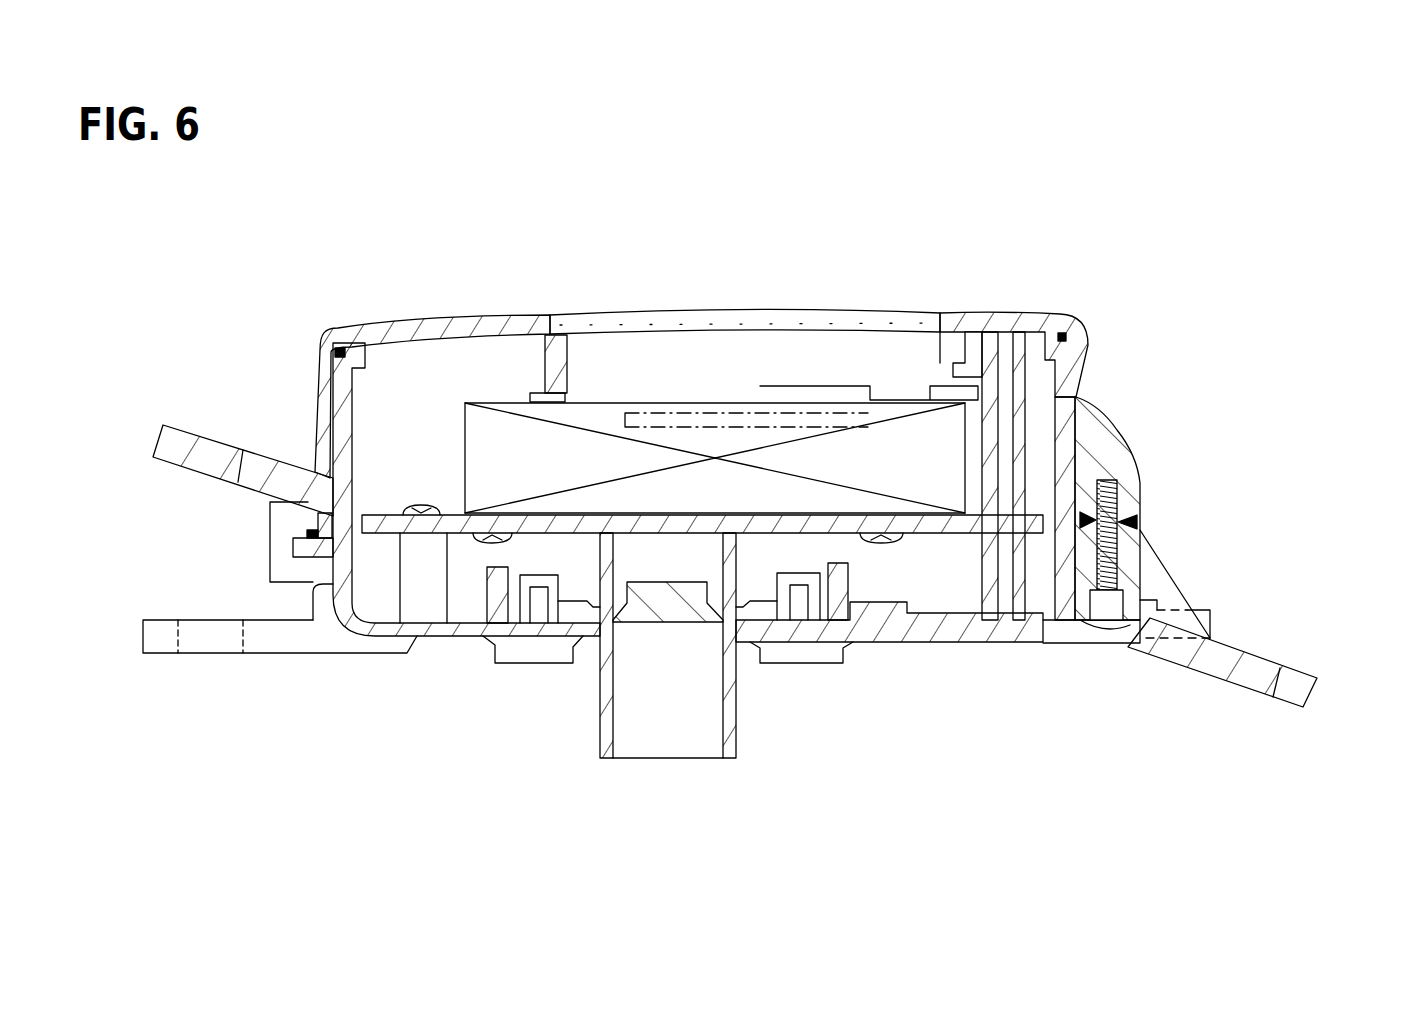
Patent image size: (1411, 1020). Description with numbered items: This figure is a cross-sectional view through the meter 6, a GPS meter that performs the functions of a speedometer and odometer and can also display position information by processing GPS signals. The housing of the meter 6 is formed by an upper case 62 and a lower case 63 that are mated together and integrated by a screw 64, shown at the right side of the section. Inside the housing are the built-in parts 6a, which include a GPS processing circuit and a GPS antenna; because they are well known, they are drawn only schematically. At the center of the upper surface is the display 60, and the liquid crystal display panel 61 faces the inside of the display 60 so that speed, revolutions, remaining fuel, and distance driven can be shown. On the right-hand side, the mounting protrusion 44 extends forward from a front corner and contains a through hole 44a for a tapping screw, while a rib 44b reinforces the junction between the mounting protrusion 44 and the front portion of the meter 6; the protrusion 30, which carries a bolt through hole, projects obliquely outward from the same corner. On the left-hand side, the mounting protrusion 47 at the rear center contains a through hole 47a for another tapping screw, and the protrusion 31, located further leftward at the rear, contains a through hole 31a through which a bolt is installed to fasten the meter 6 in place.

The meter 6 is at (439, 310).
The built-in parts 6a is at (597, 447).
The display 60 is at (845, 317).
The liquid crystal display panel 61 is at (741, 418).
The upper case 62 is at (1077, 397).
The lower case 63 is at (1140, 530).
The screw 64 is at (1140, 481).
The rib 44b is at (1165, 598).
The protrusion 30 is at (1210, 617).
The mounting protrusion 44 is at (1305, 668).
The through hole 44a is at (1243, 680).
The mounting protrusion 47 is at (160, 438).
The through hole 47a is at (227, 447).
The protrusion 31 is at (165, 657).
The through hole 31a is at (223, 643).